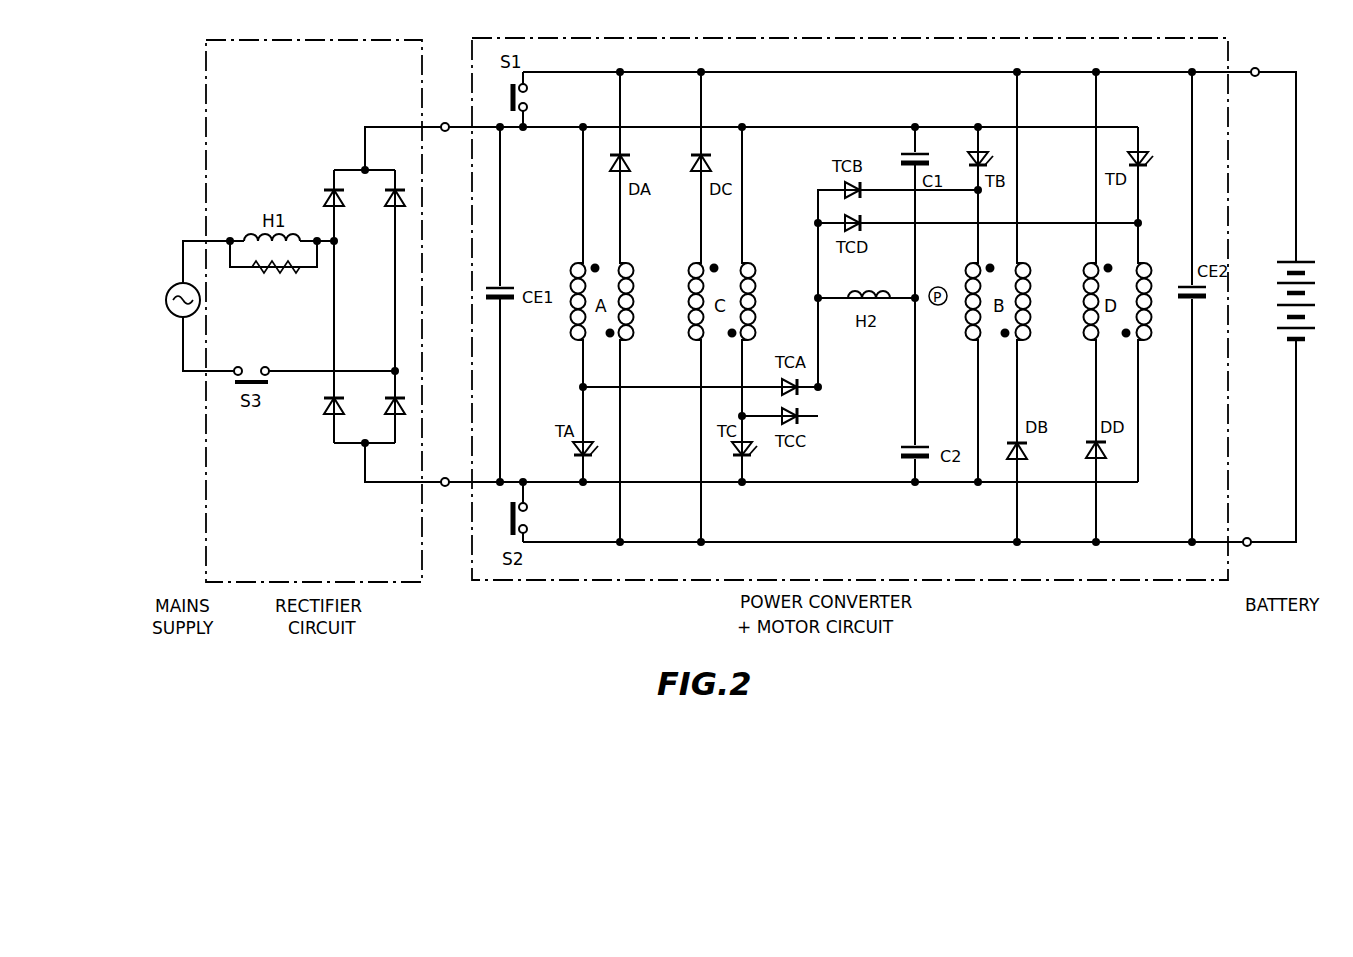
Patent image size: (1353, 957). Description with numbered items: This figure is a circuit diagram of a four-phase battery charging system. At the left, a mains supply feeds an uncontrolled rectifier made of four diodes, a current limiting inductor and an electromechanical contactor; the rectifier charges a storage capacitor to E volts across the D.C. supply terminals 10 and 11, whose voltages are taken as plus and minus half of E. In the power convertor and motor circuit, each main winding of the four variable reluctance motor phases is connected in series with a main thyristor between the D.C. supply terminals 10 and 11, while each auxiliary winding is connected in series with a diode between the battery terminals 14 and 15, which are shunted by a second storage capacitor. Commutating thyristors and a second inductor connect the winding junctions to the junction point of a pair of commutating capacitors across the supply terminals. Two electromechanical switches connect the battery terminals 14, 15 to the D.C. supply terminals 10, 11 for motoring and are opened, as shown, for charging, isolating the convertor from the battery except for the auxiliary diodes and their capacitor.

The D.C. supply terminal 10 is at (453, 116).
The D.C. supply terminal 11 is at (455, 470).
The battery terminal 14 is at (565, 72).
The battery terminal 15 is at (568, 542).